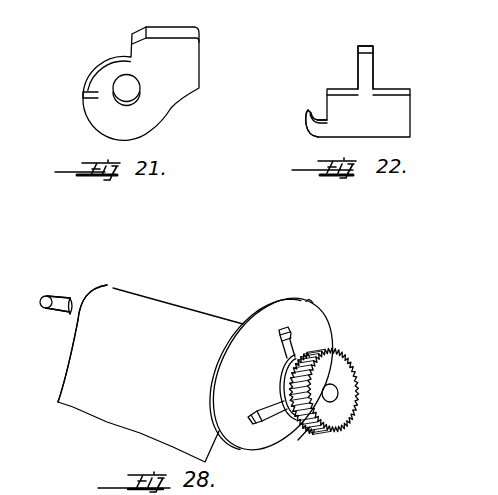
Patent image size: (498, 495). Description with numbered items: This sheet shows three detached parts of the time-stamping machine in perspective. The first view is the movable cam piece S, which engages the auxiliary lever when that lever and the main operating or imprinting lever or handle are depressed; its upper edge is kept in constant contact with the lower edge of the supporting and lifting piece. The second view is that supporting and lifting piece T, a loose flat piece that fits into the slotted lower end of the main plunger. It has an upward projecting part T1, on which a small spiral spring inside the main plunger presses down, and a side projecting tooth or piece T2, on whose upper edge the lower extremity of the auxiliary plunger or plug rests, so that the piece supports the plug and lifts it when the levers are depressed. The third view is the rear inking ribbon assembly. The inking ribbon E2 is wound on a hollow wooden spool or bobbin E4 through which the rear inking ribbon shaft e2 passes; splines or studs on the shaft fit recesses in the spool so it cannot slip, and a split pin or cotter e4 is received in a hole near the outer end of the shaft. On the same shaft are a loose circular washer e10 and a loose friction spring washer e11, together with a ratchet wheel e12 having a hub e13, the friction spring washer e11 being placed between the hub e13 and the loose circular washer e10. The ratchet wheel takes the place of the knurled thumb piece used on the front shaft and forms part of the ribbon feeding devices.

In FIG. 21, the movable cam piece S is at (83, 95).
In FIG. 22, the supporting and lifting piece T is at (358, 91).
In FIG. 22, the upward projecting part T1 is at (360, 63).
In FIG. 22, the side projecting tooth or piece T2 is at (306, 113).
In FIG. 28, the inking ribbon E2 is at (150, 373).
In FIG. 28, the wooden spool or bobbin E4 is at (78, 298).
In FIG. 28, the split pin or cotter e4 is at (52, 297).
In FIG. 28, the rear inking ribbon shaft e2 is at (58, 313).
In FIG. 28, the loose circular washer e10 is at (327, 317).
In FIG. 28, the loose friction spring washer e11 is at (283, 352).
In FIG. 28, the ratchet wheel e12 is at (359, 387).
In FIG. 28, the hub e13 is at (282, 385).